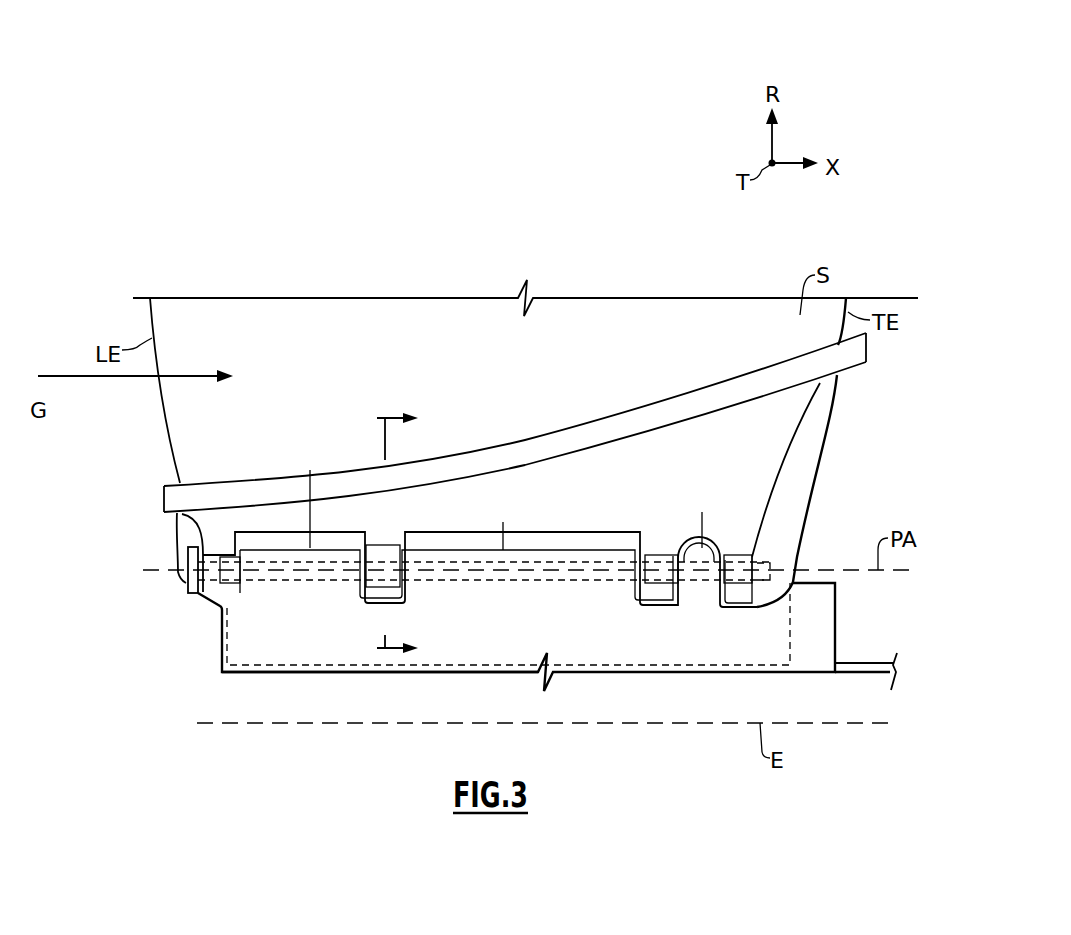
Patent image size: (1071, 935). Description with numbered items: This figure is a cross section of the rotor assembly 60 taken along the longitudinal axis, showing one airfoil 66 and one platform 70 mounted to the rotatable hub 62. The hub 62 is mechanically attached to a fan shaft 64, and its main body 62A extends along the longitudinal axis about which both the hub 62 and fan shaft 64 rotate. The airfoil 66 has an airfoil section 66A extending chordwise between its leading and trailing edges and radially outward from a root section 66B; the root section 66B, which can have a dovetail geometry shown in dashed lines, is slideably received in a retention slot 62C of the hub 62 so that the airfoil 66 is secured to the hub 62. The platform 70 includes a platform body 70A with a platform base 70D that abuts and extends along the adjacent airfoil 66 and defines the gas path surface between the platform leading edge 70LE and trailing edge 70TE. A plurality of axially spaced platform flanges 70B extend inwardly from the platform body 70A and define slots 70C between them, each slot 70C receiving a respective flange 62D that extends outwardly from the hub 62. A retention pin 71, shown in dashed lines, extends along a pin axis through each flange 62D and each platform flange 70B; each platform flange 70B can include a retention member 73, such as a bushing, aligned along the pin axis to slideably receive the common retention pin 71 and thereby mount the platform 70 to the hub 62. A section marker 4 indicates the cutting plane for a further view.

The rotor assembly 60 is at (181, 88).
The airfoil 66 is at (515, 412).
The airfoil section 66A is at (238, 310).
The root section 66B is at (768, 590).
The platform 70 is at (515, 498).
The platform body 70A is at (230, 490).
The platform base 70D is at (290, 475).
The leading edge of platform body 70LE is at (163, 500).
The trailing edge of platform body 70TE is at (868, 348).
The platform flange 70B is at (228, 596).
The slot 70C is at (345, 534).
The retention pin 71 is at (185, 590).
The retention member 73 is at (215, 592).
The rotatable hub 62 is at (492, 579).
The main body 62A is at (268, 657).
The retention slot 62C is at (435, 657).
The flange 62D is at (311, 470).
The fan shaft 64 is at (865, 662).
The section line for FIG. 4 is at (389, 533).